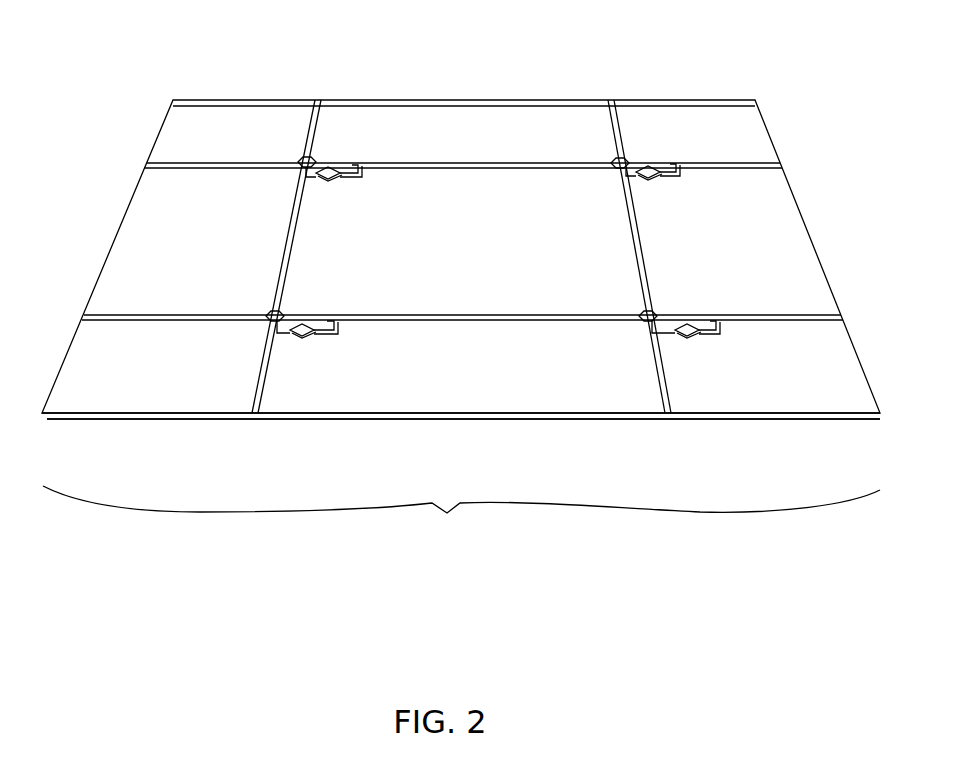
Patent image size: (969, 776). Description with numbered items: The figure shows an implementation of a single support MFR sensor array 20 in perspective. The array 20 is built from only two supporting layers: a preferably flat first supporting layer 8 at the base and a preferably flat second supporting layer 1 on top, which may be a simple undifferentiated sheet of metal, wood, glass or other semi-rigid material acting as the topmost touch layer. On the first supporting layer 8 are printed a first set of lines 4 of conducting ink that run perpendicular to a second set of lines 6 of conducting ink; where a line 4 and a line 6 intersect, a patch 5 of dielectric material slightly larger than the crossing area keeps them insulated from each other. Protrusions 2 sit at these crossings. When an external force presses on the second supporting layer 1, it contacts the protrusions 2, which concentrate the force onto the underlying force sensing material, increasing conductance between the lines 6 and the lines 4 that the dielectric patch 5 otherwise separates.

The second supporting layer 1 is at (173, 100).
The protrusions 2 is at (337, 175).
The lines of conducting ink 4 is at (240, 160).
The patch of dielectric material 5 is at (273, 312).
The second set of lines of conducting ink 6 is at (312, 137).
The first supporting layer 8 is at (202, 418).
The MFR sensor array 20 is at (461, 513).